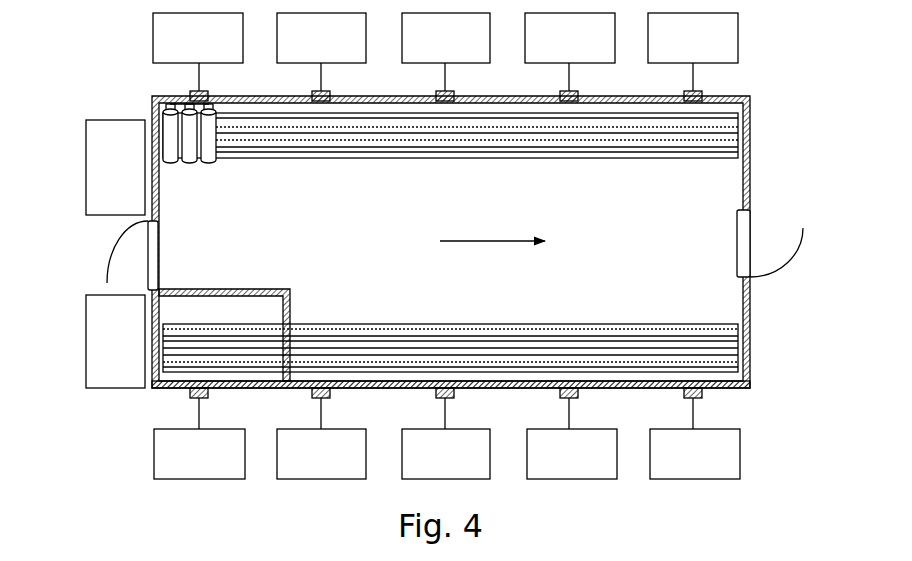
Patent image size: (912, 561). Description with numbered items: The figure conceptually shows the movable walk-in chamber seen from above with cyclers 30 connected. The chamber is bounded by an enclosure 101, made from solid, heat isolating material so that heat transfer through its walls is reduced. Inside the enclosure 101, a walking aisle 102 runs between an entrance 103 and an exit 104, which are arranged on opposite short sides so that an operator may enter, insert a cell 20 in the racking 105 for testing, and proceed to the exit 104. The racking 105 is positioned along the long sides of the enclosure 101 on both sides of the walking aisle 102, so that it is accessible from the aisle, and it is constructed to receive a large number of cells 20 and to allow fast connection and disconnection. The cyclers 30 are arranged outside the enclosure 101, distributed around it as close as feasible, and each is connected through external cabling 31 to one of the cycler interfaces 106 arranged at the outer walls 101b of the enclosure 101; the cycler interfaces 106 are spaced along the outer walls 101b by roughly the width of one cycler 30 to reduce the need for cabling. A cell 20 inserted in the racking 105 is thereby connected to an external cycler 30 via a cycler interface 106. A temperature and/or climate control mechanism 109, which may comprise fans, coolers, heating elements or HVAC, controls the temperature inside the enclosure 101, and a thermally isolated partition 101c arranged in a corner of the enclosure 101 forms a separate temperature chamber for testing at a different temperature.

The cell 20 is at (210, 165).
The cycler 30 is at (186, 49).
The external cabling 31 is at (200, 92).
The enclosure 101 is at (731, 193).
The outer walls 101b is at (628, 388).
The partitions 101c is at (247, 319).
The walking aisle 102 is at (477, 228).
The entrance 103 is at (148, 262).
The exit 104 is at (745, 243).
The racking 105 is at (728, 128).
The cycler interface 106 is at (190, 97).
The temperature and/or climate control mechanism 109 is at (134, 161).